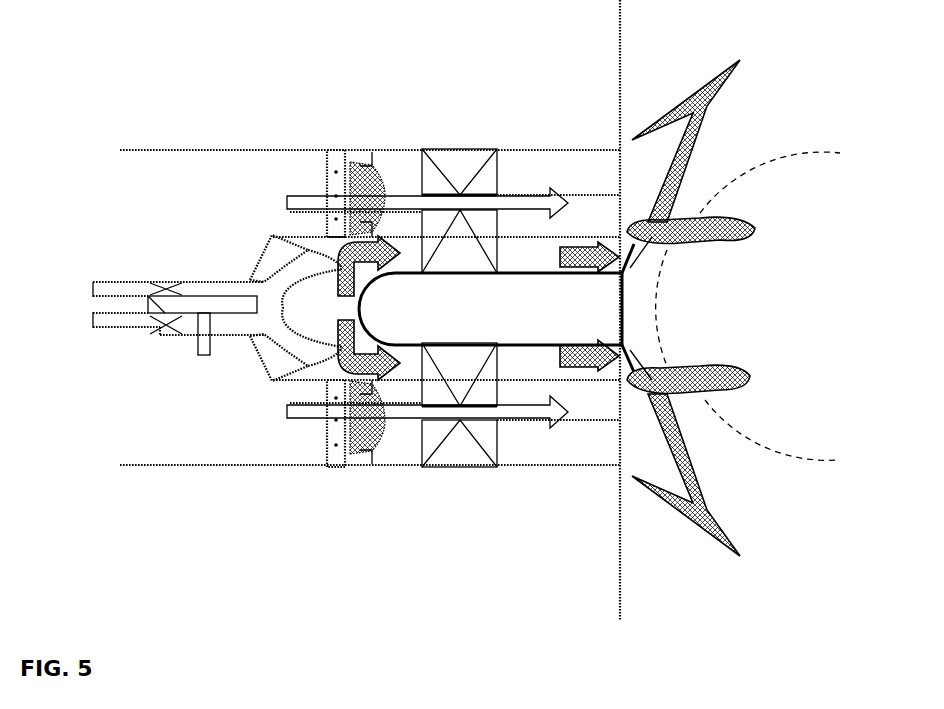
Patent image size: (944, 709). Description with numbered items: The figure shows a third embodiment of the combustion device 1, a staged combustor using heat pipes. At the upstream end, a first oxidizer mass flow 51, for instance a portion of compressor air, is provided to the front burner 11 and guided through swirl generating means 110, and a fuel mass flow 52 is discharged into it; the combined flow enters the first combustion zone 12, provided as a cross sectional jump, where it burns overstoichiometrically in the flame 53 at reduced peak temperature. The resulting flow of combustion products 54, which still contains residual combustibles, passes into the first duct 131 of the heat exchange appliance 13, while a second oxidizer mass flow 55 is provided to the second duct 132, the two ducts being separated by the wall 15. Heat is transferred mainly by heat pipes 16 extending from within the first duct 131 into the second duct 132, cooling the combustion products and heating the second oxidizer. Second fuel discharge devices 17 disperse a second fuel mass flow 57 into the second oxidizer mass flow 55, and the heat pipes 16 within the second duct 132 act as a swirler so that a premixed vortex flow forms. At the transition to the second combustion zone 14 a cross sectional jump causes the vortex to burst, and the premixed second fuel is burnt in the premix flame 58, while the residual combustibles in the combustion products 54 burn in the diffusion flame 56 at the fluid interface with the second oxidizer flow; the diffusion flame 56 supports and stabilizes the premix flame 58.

The combustion device 1 is at (442, 114).
The front burner 11 is at (170, 340).
The first combustion zone 12 is at (286, 317).
The heat exchange appliance 13 is at (496, 478).
The second combustion zone 14 is at (838, 377).
The wall 15 is at (605, 233).
The heat pipe 16 is at (461, 172).
The second fuel discharge device 17 is at (313, 166).
The first oxidizer mass flow 51 is at (98, 290).
The fuel mass flow 52 is at (203, 360).
The flame 53 is at (263, 343).
The flow of combustion products 54 is at (352, 251).
The second oxidizer mass flow 55 is at (511, 193).
The diffusion flame 56 is at (740, 246).
The second fuel mass flow 57 is at (358, 178).
The premix flame 58 is at (742, 82).
The swirl generating means 110 is at (181, 282).
The first duct of heat exchange appliance 131 is at (507, 270).
The second duct of heat exchange appliance 132 is at (520, 187).